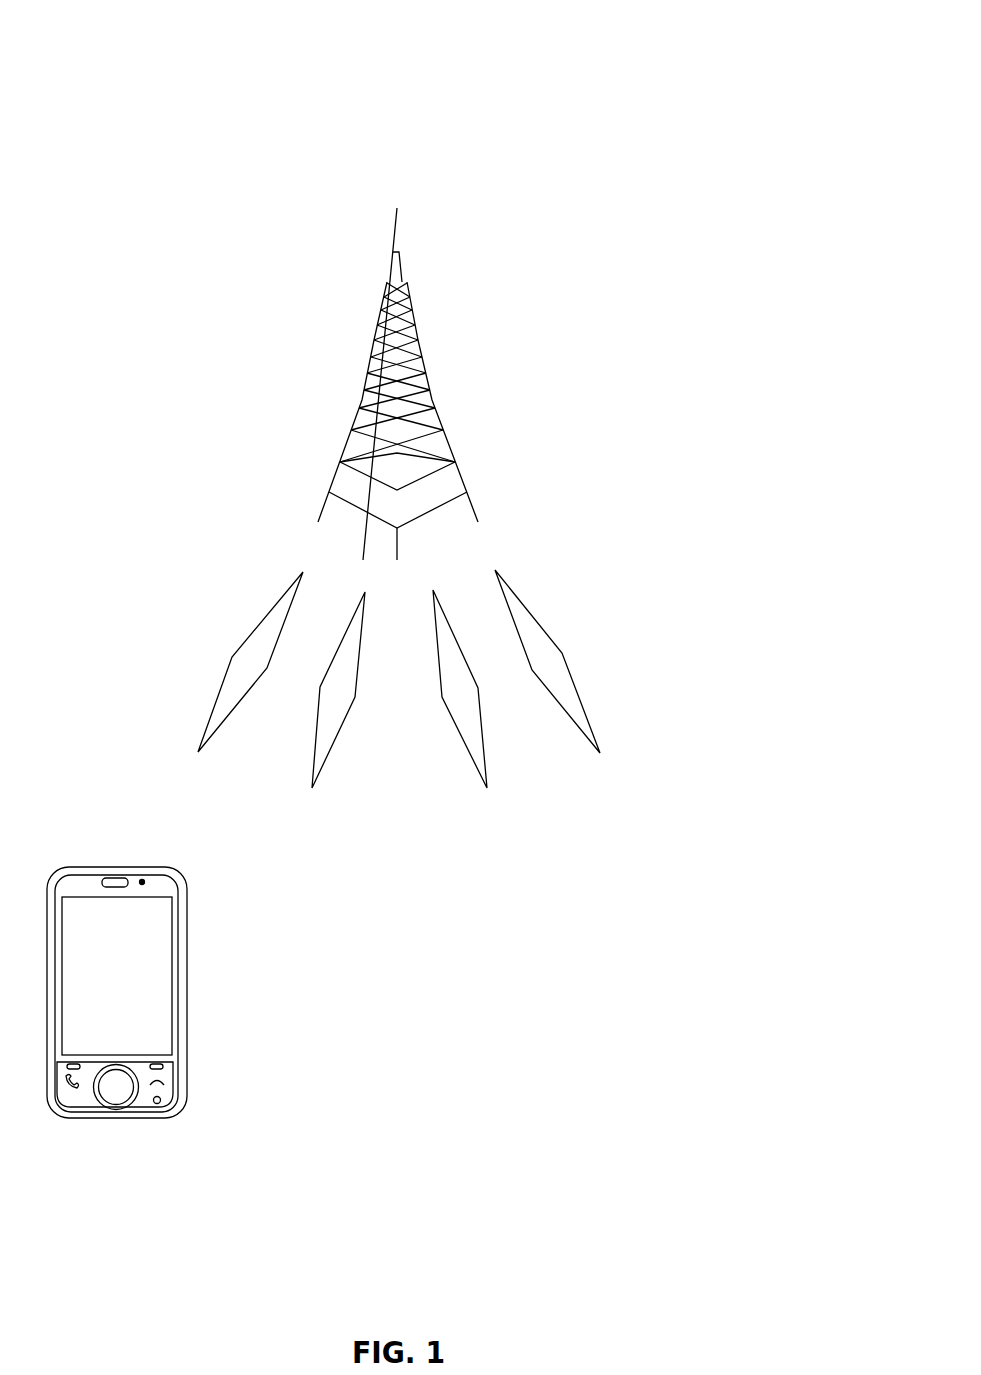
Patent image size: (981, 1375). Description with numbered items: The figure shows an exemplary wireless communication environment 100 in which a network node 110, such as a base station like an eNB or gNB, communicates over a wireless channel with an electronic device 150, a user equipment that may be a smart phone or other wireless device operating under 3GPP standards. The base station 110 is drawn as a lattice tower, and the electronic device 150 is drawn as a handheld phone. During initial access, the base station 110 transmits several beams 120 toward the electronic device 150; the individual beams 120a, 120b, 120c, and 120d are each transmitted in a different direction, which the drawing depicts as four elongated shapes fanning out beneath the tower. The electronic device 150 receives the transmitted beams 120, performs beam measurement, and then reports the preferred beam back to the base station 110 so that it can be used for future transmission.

The wireless communication environment 100 is at (798, 21).
The network node 110 is at (433, 390).
The beams 120 is at (404, 641).
The beam 120a is at (257, 625).
The beam 120b is at (312, 763).
The beam 120c is at (467, 745).
The beam 120d is at (545, 627).
The electronic device 150 is at (185, 985).